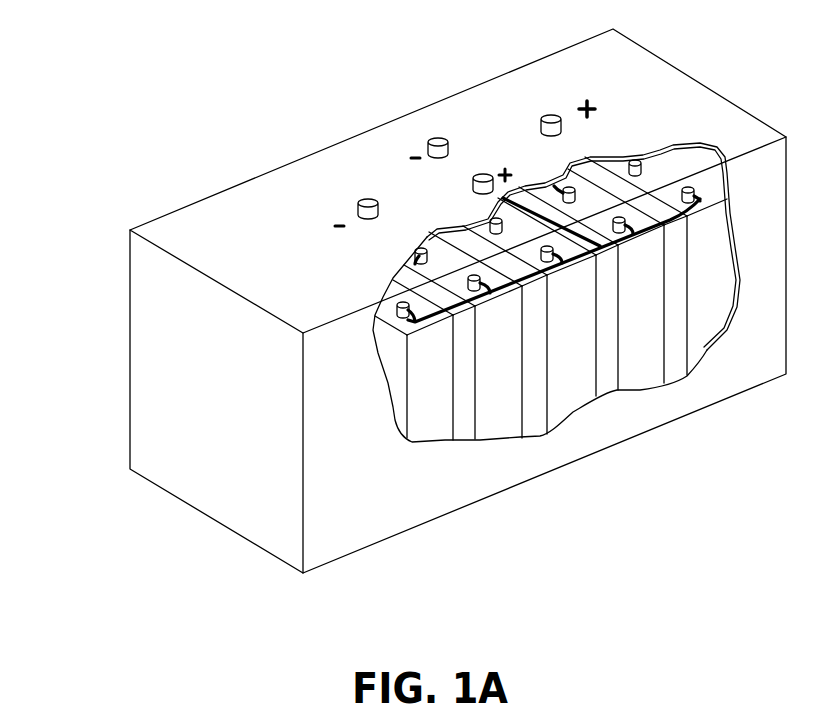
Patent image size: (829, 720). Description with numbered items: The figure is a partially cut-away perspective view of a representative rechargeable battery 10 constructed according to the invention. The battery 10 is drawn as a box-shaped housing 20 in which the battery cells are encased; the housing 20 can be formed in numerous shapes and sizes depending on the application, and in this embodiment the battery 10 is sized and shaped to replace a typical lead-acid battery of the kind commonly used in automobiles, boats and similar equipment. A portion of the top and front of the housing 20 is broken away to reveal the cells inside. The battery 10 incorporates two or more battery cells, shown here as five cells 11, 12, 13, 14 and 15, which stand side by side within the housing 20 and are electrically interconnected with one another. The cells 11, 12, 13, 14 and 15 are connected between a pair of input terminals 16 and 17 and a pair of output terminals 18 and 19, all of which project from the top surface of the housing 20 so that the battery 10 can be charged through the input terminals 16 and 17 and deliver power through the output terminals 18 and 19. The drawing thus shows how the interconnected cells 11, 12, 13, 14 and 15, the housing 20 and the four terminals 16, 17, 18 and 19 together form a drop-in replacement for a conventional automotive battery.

The rechargeable battery 10 is at (136, 86).
The battery cell 11 is at (427, 422).
The battery cell 12 is at (502, 395).
The battery cell 13 is at (568, 380).
The battery cell 14 is at (630, 357).
The battery cell 15 is at (708, 320).
The input terminal 16 is at (437, 135).
The input terminal 17 is at (482, 170).
The output terminal 18 is at (367, 197).
The output terminal 19 is at (549, 112).
The housing 20 is at (183, 350).